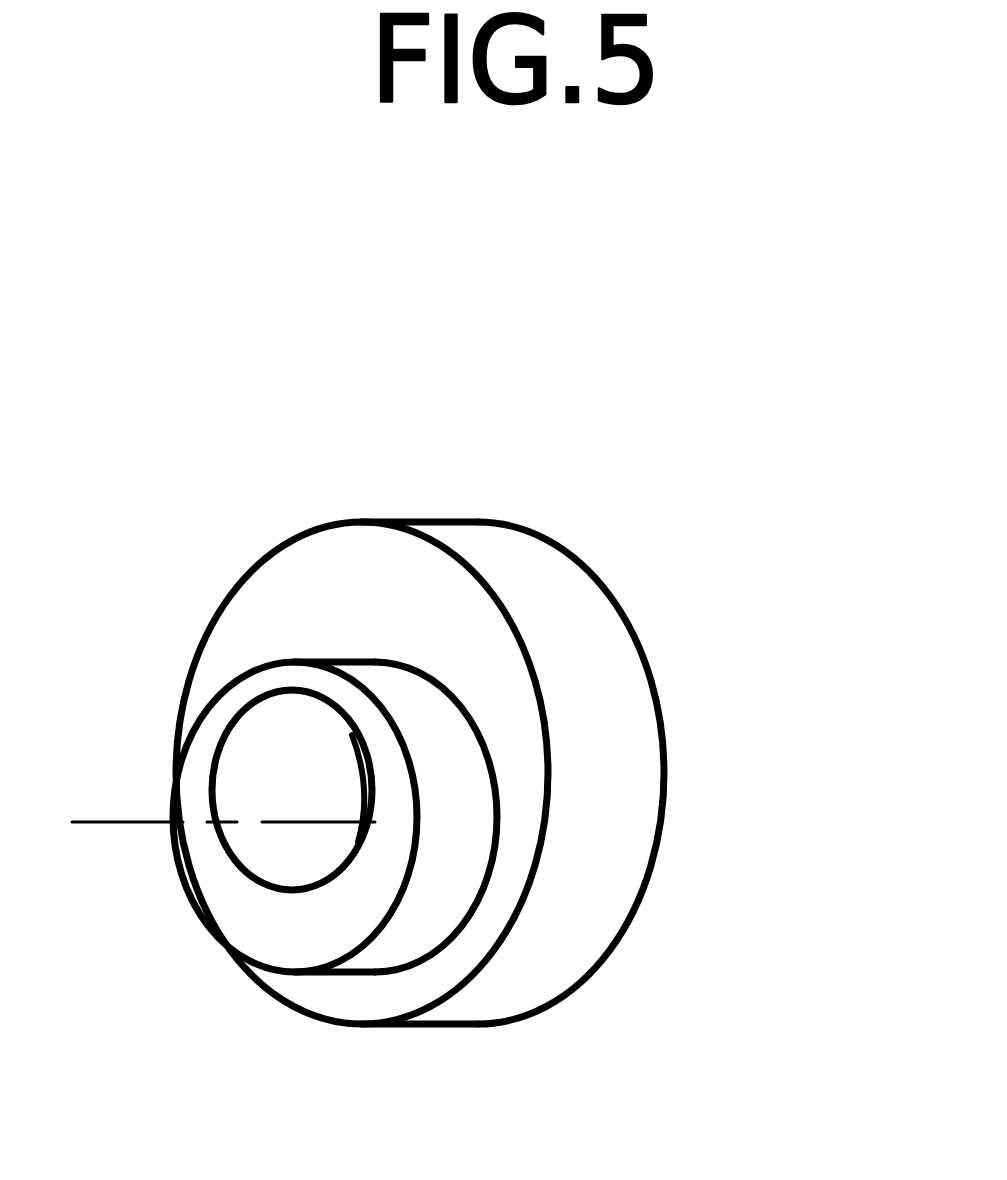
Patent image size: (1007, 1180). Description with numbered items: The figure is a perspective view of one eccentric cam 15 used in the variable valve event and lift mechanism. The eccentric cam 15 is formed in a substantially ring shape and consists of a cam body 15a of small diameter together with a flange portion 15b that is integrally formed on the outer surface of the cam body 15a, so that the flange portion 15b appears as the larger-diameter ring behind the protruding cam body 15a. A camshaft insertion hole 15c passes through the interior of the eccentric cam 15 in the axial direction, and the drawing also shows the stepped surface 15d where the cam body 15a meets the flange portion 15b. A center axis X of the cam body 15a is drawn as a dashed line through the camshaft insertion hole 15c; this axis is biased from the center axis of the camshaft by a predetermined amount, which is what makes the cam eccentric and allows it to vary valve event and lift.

The eccentric cam 15 is at (418, 728).
The cam body 15a is at (325, 930).
The flange portion 15b is at (633, 788).
The camshaft insertion hole 15c is at (273, 843).
The stepped boss surface 15d is at (463, 877).
The center axis of cam body x is at (120, 822).